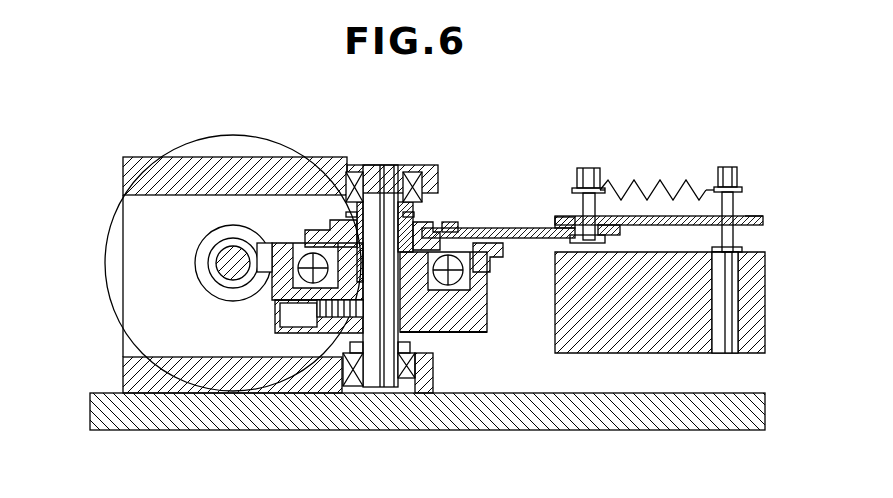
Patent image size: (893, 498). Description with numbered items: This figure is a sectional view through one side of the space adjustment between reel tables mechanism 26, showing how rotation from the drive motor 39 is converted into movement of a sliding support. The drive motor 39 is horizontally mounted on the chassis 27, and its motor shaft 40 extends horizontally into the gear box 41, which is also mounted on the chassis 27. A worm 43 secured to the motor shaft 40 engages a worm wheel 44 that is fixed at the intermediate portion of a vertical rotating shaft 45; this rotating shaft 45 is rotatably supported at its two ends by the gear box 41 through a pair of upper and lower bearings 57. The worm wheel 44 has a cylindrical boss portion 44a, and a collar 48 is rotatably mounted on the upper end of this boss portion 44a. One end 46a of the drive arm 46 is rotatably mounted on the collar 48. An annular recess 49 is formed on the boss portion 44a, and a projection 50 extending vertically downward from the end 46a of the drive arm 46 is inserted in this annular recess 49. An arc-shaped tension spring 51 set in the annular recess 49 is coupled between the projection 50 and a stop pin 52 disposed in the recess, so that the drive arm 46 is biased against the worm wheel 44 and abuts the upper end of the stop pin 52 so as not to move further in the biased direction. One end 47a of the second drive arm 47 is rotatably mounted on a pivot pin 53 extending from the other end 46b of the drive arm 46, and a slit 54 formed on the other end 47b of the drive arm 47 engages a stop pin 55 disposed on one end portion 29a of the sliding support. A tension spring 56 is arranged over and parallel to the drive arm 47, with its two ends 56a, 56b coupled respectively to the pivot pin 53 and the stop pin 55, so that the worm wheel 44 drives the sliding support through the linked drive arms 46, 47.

The space adjustment between reel tables mechanism 26 is at (113, 172).
The chassis 27 is at (282, 425).
The one end portion of the sliding support 29a is at (600, 334).
The drive motor 39 is at (218, 136).
The motor shaft 40 is at (226, 250).
The gear box 41 is at (140, 157).
The worm 43 is at (214, 282).
The worm wheel 44 is at (484, 300).
The cylindrical boss portion 44a is at (430, 333).
The rotating shaft 45 is at (376, 173).
The drive arm 46 is at (520, 228).
The one end of the drive arm 46a is at (342, 220).
The other end of the drive arm 46b is at (566, 238).
The drive arm 47 is at (636, 225).
The one end of the drive arm 47a is at (558, 216).
The other end of the drive arm 47b is at (700, 256).
The collar 48 is at (424, 218).
The annular recess 49 is at (292, 248).
The projection 50 is at (295, 300).
The tension spring 51 is at (278, 290).
The stop pin 52 is at (452, 224).
The pivot pin 53 is at (583, 168).
The slit 54 is at (749, 216).
The stop pin 55 is at (735, 167).
The tension spring 56 is at (656, 182).
The end of the tension spring 56a is at (606, 188).
The end of the tension spring 56b is at (728, 178).
The bearing 57 is at (351, 172).